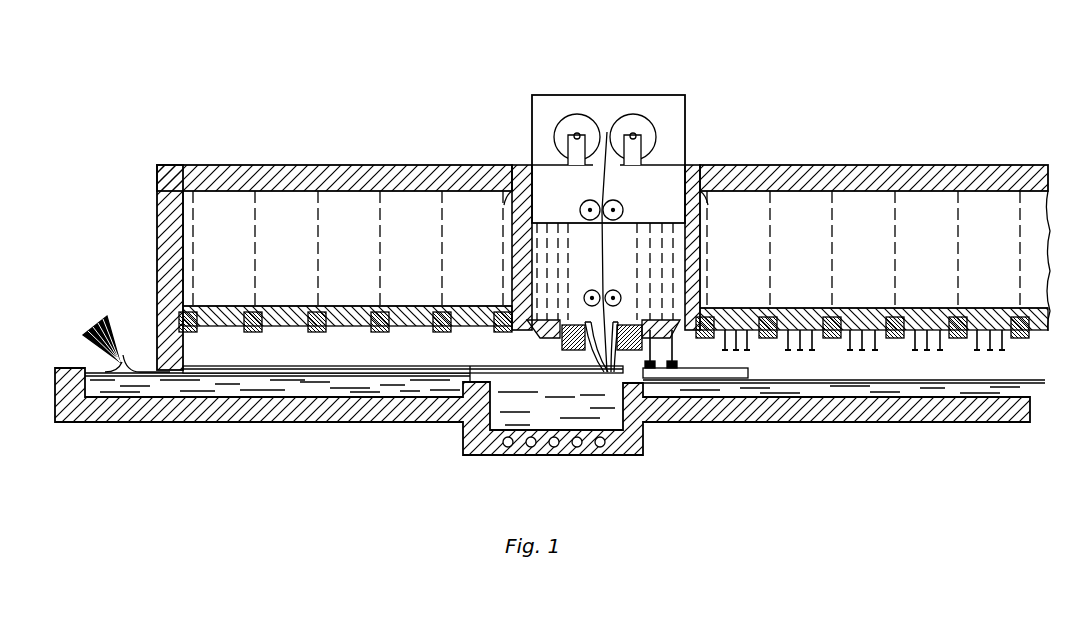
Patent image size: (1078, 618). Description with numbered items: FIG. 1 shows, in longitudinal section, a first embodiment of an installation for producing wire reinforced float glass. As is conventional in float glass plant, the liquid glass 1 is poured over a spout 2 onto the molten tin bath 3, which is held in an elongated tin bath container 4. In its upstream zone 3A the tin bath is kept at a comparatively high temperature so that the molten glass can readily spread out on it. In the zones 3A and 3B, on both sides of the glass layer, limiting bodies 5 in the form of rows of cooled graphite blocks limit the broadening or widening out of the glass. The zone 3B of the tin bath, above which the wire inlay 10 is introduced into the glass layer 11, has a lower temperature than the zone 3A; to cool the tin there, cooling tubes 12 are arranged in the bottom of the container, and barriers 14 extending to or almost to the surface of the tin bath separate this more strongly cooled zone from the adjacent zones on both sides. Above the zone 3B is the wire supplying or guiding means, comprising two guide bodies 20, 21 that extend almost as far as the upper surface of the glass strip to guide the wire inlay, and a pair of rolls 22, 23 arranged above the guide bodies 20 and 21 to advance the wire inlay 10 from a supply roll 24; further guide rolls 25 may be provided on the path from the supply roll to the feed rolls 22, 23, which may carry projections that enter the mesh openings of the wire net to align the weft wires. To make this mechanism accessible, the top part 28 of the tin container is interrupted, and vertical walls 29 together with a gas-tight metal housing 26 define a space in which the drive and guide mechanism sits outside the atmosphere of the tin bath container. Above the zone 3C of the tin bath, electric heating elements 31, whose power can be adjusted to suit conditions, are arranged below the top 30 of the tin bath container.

The liquid glass 1 is at (123, 356).
The spout 2 is at (78, 340).
The tin bath 3 is at (213, 388).
The upstream zone 3A is at (316, 388).
The zone of the tin bath 3B is at (556, 408).
The zone of the tin bath 3C is at (858, 392).
The tin bath container 4 is at (133, 398).
The limiting bodies 5 is at (405, 370).
The wire inlay 10 is at (605, 256).
The glass layer 11 is at (513, 368).
The cooling tubes 12 is at (577, 453).
The barriers 14 is at (479, 378).
The guide body 20 is at (562, 340).
The guide body 21 is at (612, 359).
The feed roll 22 is at (584, 298).
The feed roll 23 is at (615, 290).
The supply roll 24 is at (620, 127).
The guide rolls 25 is at (618, 209).
The gas-tight metal housing 26 is at (686, 118).
The top part of the tin container 28 is at (362, 165).
The vertical walls 29 is at (512, 222).
The top of the tin bath container 30 is at (792, 314).
The electric heating elements 31 is at (742, 344).